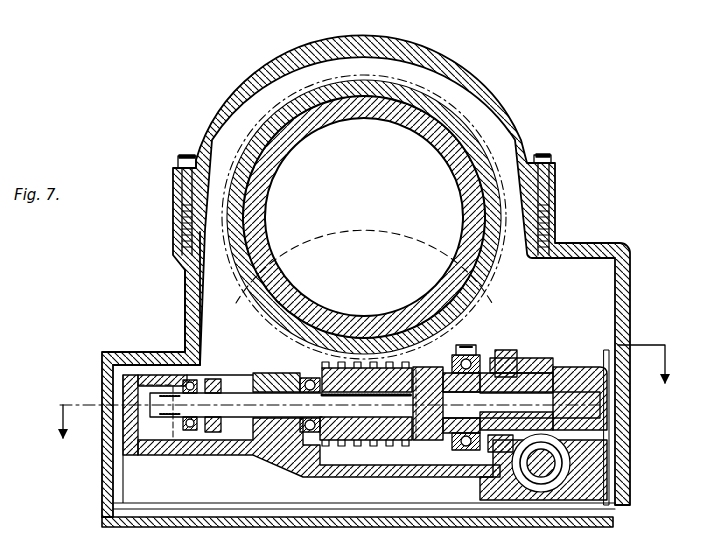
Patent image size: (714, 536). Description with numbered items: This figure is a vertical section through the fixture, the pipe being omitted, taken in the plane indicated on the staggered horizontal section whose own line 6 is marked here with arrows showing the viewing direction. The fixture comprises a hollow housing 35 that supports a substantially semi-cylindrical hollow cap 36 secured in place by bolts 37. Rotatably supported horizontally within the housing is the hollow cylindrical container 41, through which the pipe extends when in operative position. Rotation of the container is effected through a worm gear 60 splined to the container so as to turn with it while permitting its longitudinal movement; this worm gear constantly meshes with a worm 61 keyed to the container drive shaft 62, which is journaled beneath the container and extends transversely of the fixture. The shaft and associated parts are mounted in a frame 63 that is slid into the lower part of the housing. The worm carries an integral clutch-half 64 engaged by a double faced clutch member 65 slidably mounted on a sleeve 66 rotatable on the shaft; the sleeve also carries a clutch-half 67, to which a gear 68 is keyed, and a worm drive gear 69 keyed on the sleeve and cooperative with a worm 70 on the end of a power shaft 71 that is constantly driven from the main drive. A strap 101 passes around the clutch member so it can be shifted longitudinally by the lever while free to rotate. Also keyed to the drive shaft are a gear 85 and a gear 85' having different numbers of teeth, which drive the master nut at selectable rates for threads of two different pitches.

The section line 6— 6 is at (361, 391).
The hollow housing 35 is at (191, 320).
The semi-cylindrical hollow cap 36 is at (286, 56).
The bolts 37 is at (181, 193).
The container 41 is at (336, 106).
The worm gear 60 is at (268, 334).
The worm 61 is at (366, 443).
The container drive shaft 62 is at (367, 389).
The frame 63 is at (281, 473).
The clutch-half 64 is at (428, 417).
The double faced clutch member 65 is at (460, 452).
The sleeve 66 is at (500, 368).
The clutch-half 67 is at (493, 453).
The gear 68 is at (510, 353).
The worm drive gear 69 is at (542, 358).
The worm 70 is at (548, 450).
The power shaft 71 is at (553, 466).
The gear 85 is at (186, 430).
The gear 85' is at (217, 429).
The strap 101 is at (478, 360).